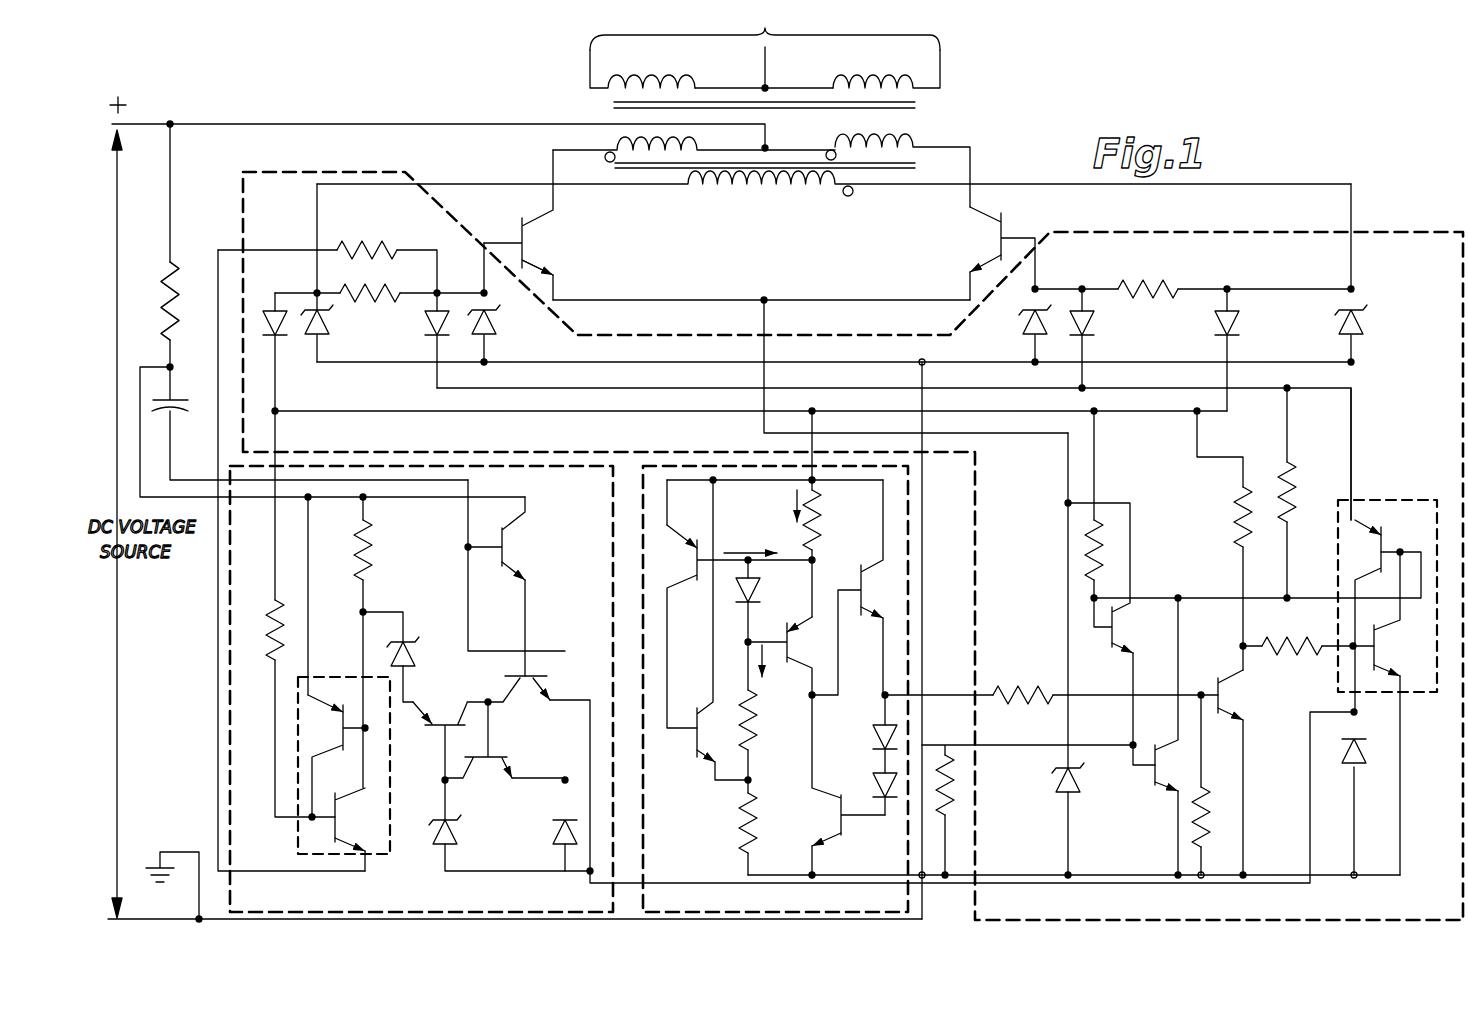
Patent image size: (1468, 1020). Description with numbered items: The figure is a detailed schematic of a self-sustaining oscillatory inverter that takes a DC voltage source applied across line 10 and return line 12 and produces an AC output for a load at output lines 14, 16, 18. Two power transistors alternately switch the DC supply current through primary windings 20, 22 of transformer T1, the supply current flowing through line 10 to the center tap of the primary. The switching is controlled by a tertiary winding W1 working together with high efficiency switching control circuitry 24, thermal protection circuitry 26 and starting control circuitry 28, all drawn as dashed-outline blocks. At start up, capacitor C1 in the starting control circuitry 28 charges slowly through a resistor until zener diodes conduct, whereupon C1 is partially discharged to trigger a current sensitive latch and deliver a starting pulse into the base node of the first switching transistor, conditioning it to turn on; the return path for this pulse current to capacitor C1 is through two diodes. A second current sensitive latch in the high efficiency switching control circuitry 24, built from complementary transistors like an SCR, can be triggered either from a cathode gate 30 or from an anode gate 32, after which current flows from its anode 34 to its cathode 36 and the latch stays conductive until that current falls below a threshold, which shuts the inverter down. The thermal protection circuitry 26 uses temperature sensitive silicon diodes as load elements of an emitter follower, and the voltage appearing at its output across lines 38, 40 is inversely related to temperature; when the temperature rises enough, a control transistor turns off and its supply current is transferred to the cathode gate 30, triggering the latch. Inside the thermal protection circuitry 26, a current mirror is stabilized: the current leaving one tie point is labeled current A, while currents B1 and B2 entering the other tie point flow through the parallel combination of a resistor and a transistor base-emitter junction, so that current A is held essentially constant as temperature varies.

The line 10 is at (150, 126).
The return line 12 is at (125, 919).
The output line 14 is at (622, 68).
The output line 16 is at (767, 55).
The output line 18 is at (938, 73).
The primary winding 20 is at (637, 140).
The primary winding 22 is at (907, 148).
The high efficiency switching control circuitry 24 is at (1380, 232).
The thermal protection circuitry 26 is at (908, 893).
The starting control circuitry 28 is at (520, 912).
The cathode gate 30 is at (1332, 648).
The anode gate 32 is at (1325, 602).
The anode 34 is at (1355, 432).
The cathode 36 is at (1402, 737).
The line 38 is at (898, 690).
The line 40 is at (853, 873).
The transformer T1 is at (912, 130).
The tertiary winding W1 is at (723, 191).
The capacitor C1 is at (332, 430).
The current A is at (772, 664).
The current B1 is at (750, 537).
The current B2 is at (781, 507).